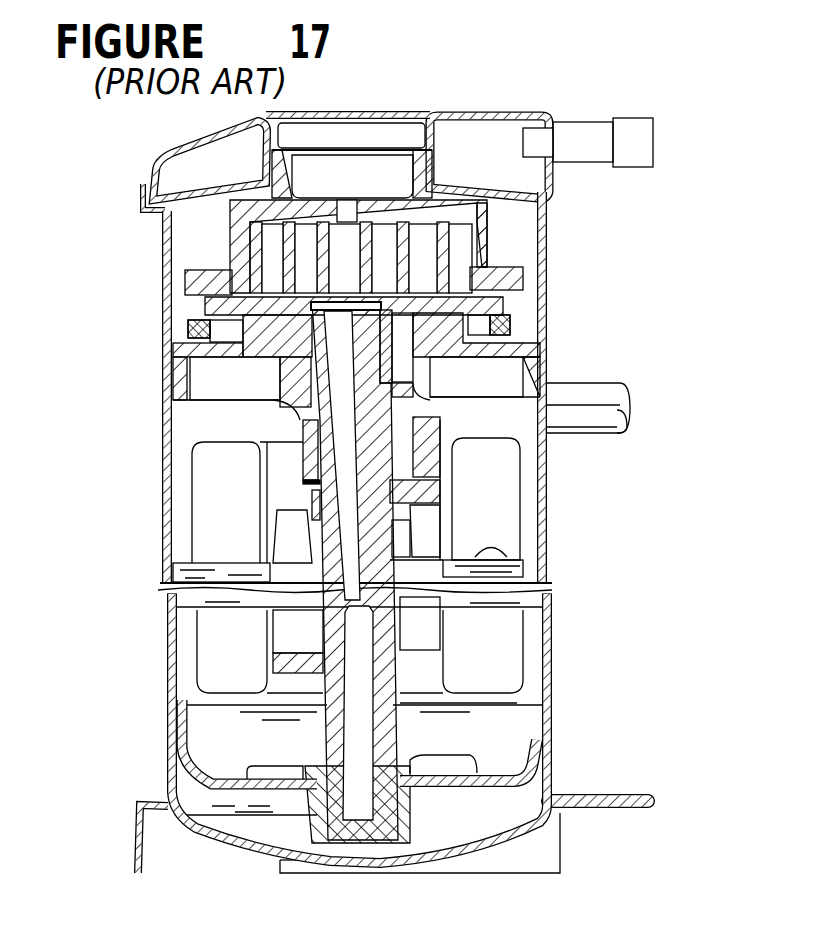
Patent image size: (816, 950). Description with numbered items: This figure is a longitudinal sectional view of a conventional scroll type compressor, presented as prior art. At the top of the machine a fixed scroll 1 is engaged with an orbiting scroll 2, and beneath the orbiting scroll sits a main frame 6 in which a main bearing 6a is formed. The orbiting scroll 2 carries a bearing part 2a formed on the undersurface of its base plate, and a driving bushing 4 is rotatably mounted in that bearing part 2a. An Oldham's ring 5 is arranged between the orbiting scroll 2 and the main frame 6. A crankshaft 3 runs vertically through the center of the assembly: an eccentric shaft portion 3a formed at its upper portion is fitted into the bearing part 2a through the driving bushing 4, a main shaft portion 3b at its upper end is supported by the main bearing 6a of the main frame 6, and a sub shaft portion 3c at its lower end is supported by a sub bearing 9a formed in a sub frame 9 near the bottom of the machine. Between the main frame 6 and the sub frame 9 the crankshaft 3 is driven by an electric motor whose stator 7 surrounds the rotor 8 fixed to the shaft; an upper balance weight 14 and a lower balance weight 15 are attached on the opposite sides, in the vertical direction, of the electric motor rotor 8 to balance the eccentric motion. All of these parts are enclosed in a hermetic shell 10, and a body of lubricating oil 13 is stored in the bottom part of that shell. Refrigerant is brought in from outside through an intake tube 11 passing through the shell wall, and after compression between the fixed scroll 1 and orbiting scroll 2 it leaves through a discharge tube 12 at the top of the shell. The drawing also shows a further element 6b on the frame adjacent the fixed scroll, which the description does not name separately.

The fixed scroll 1 is at (486, 244).
The orbiting scroll 2 is at (520, 300).
The bearing part 2a is at (300, 375).
The crankshaft 3 is at (298, 434).
The eccentric shaft portion 3a is at (510, 337).
The main shaft portion 3b is at (318, 384).
The sub shaft portion 3c is at (320, 766).
The driving bushing 4 is at (297, 340).
The Oldham's ring 5 is at (165, 335).
The main frame 6 is at (493, 359).
The main bearing 6a is at (443, 492).
The frame upper portion 6b is at (487, 283).
The electric motor stator 7 is at (507, 557).
The electric motor rotor 8 is at (292, 528).
The sub frame 9 is at (400, 760).
The sub bearing 9a is at (400, 797).
The hermetic shell 10 is at (168, 628).
The intake tube 11 is at (570, 440).
The discharge tube 12 is at (582, 122).
The lubricating oil 13 is at (208, 732).
The upper balance weight 14 is at (443, 452).
The lower balance weight 15 is at (257, 667).